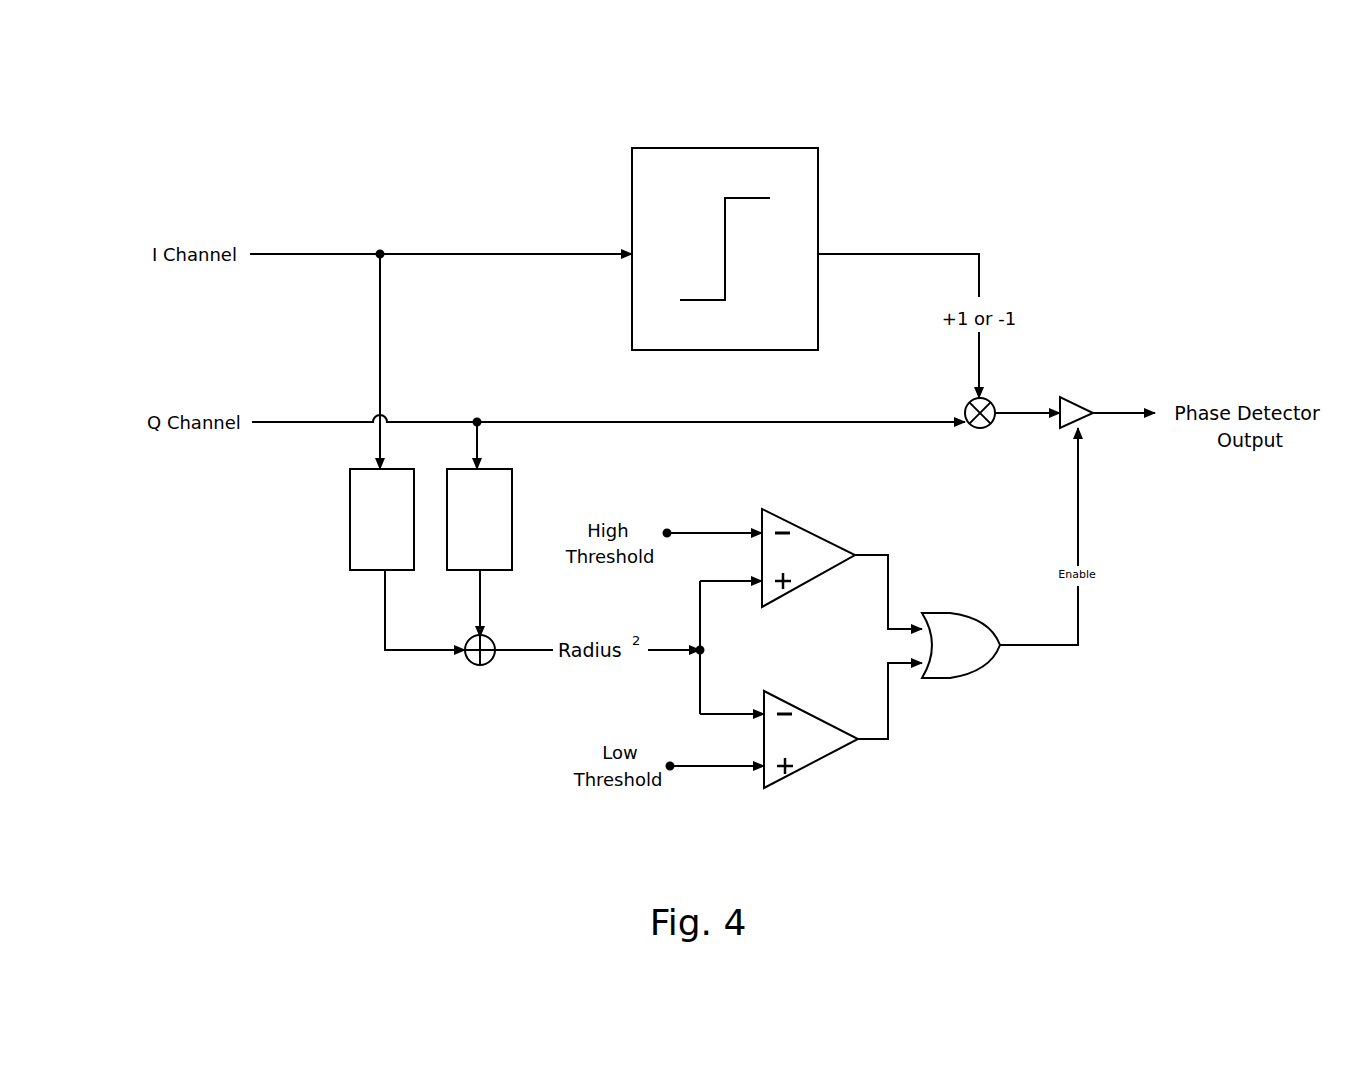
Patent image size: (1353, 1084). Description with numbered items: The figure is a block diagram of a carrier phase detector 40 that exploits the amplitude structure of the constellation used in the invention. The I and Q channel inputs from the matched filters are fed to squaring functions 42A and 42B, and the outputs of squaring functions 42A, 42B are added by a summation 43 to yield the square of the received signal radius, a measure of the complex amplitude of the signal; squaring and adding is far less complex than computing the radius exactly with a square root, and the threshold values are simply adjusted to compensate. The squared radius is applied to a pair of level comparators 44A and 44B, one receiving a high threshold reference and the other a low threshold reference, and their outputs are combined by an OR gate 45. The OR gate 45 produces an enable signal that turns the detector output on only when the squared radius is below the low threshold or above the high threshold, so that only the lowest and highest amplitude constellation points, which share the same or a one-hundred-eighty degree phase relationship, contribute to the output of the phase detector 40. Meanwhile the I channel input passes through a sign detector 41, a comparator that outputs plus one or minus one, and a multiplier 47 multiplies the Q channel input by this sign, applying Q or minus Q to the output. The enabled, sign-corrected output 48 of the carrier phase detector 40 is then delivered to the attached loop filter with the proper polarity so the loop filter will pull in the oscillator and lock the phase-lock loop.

The carrier phase detector 40 is at (160, 168).
The sign detector 41 is at (674, 148).
The squaring function 42A is at (350, 494).
The squaring function 42B is at (512, 487).
The summation 43 is at (476, 690).
The comparator 44A is at (808, 528).
The comparator 44B is at (836, 745).
The OR gate 45 is at (952, 612).
The multiplier 47 is at (991, 400).
The output buffer 48 is at (1076, 400).